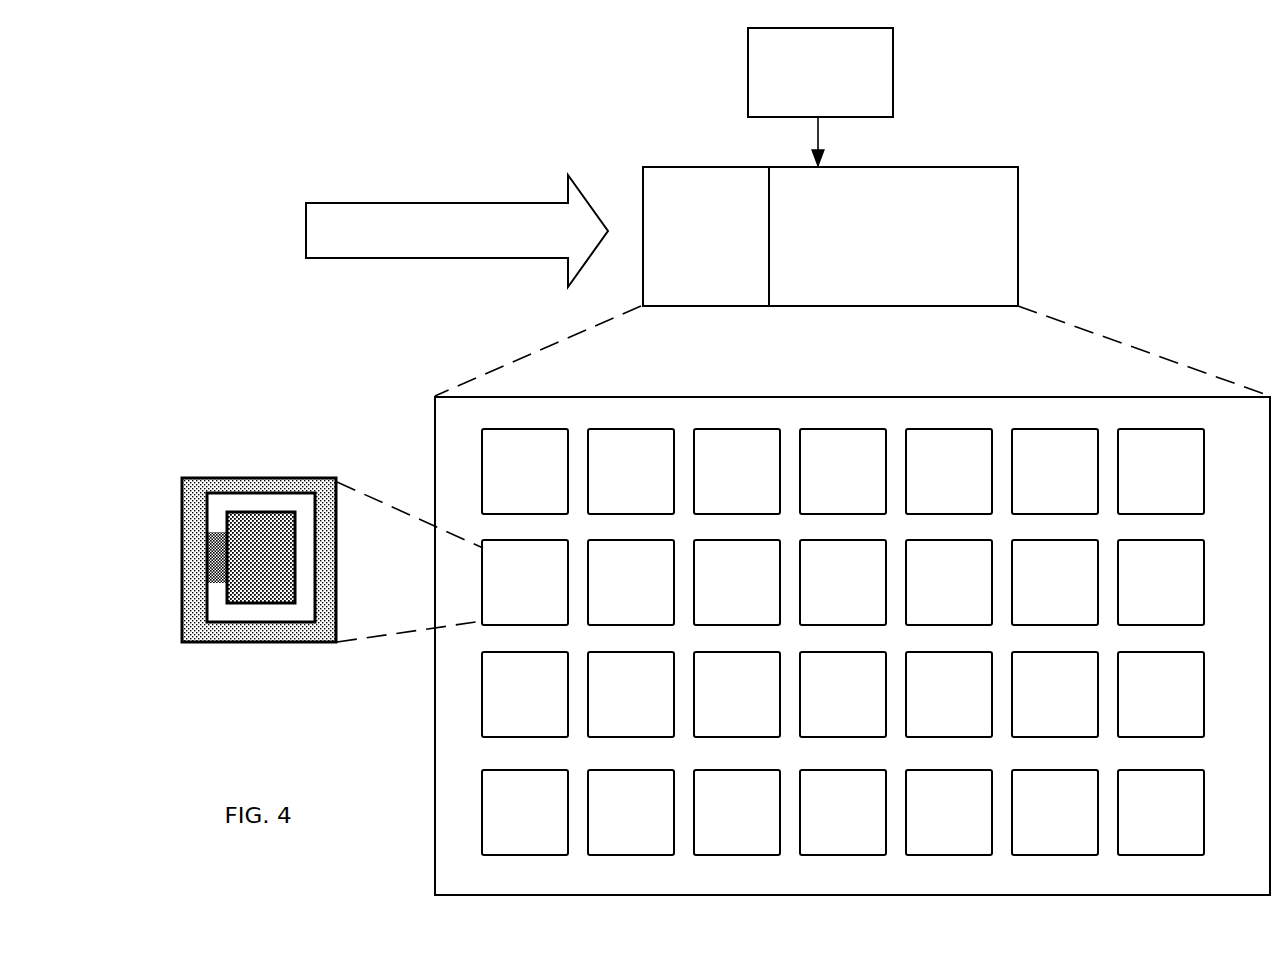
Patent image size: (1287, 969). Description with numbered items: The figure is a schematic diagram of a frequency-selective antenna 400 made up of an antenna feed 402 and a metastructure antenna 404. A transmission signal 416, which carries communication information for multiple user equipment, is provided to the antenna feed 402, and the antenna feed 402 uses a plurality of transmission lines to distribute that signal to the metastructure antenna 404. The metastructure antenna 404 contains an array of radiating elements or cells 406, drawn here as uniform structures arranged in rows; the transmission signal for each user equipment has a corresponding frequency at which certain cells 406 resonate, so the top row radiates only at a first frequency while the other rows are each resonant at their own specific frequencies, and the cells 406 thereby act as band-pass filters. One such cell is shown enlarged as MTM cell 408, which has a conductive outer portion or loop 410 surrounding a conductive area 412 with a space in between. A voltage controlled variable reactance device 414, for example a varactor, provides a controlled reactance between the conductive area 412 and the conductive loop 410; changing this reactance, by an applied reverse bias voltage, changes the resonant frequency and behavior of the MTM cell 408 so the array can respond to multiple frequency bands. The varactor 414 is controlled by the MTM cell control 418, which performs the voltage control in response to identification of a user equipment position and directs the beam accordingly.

The frequency-selective antenna 400 is at (372, 88).
The antenna feed 402 is at (670, 165).
The metastructure antenna 404 is at (925, 165).
The array of cells 406 is at (852, 395).
The MTM cell 408 is at (483, 590).
The conductive loop 410 is at (263, 488).
The conductive area 412 is at (253, 572).
The voltage controlled variable reactance device 414 is at (207, 553).
The transmission signal 416 is at (437, 202).
The MTM cell control 418 is at (895, 80).